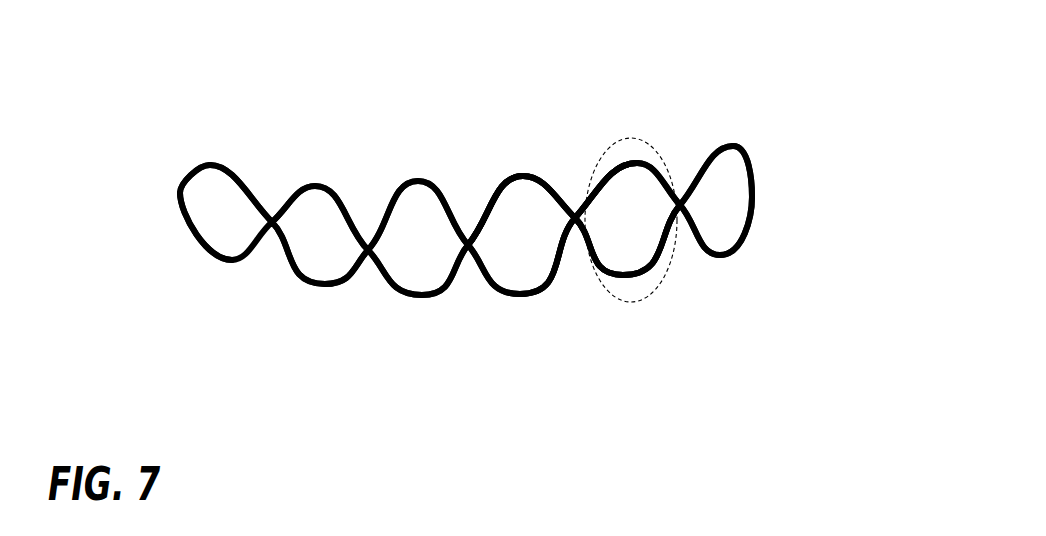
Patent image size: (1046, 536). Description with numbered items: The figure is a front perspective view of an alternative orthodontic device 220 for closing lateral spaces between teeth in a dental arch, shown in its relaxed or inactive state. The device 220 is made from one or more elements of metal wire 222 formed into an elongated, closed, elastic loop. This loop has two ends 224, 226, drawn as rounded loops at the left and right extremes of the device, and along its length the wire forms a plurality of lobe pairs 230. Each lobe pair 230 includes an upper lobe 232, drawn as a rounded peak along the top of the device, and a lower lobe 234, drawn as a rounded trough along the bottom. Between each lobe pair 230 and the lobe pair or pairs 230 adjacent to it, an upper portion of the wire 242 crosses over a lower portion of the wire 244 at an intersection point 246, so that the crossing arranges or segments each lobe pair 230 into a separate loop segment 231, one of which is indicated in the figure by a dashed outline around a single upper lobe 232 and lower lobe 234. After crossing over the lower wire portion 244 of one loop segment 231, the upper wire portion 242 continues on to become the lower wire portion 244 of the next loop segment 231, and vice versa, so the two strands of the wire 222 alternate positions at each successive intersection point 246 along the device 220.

The orthodontic device 220 is at (203, 33).
The metal wire 222 is at (205, 247).
The end 224 is at (184, 172).
The end 226 is at (757, 192).
The lobe pair 230 is at (503, 207).
The loop segment 231 is at (657, 145).
The upper lobe 232 is at (212, 162).
The lower lobe 234 is at (324, 287).
The upper portion of the wire 242 is at (575, 216).
The lower portion of the wire 244 is at (483, 170).
The intersection point 246 is at (577, 216).